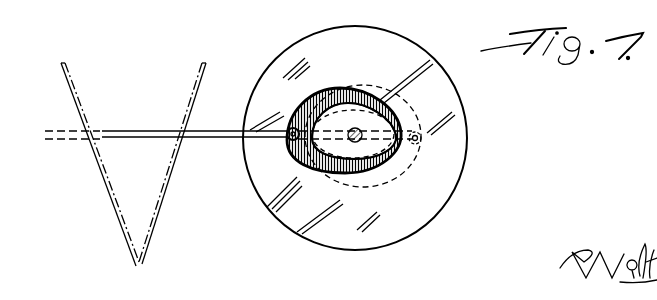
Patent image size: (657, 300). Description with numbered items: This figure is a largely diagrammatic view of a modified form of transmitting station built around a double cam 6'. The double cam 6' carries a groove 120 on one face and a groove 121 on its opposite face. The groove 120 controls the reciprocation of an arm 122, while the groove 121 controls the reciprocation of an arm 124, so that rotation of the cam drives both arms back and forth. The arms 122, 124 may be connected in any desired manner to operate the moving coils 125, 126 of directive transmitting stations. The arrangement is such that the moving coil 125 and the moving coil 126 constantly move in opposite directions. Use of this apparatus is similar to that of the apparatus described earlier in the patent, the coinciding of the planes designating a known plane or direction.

The double cam 6' is at (355, 125).
The groove 120 is at (324, 89).
The groove 121 is at (415, 112).
The arm 122 is at (135, 115).
The arm 124 is at (224, 130).
The moving coil 125 is at (92, 60).
The moving coil 126 is at (200, 80).